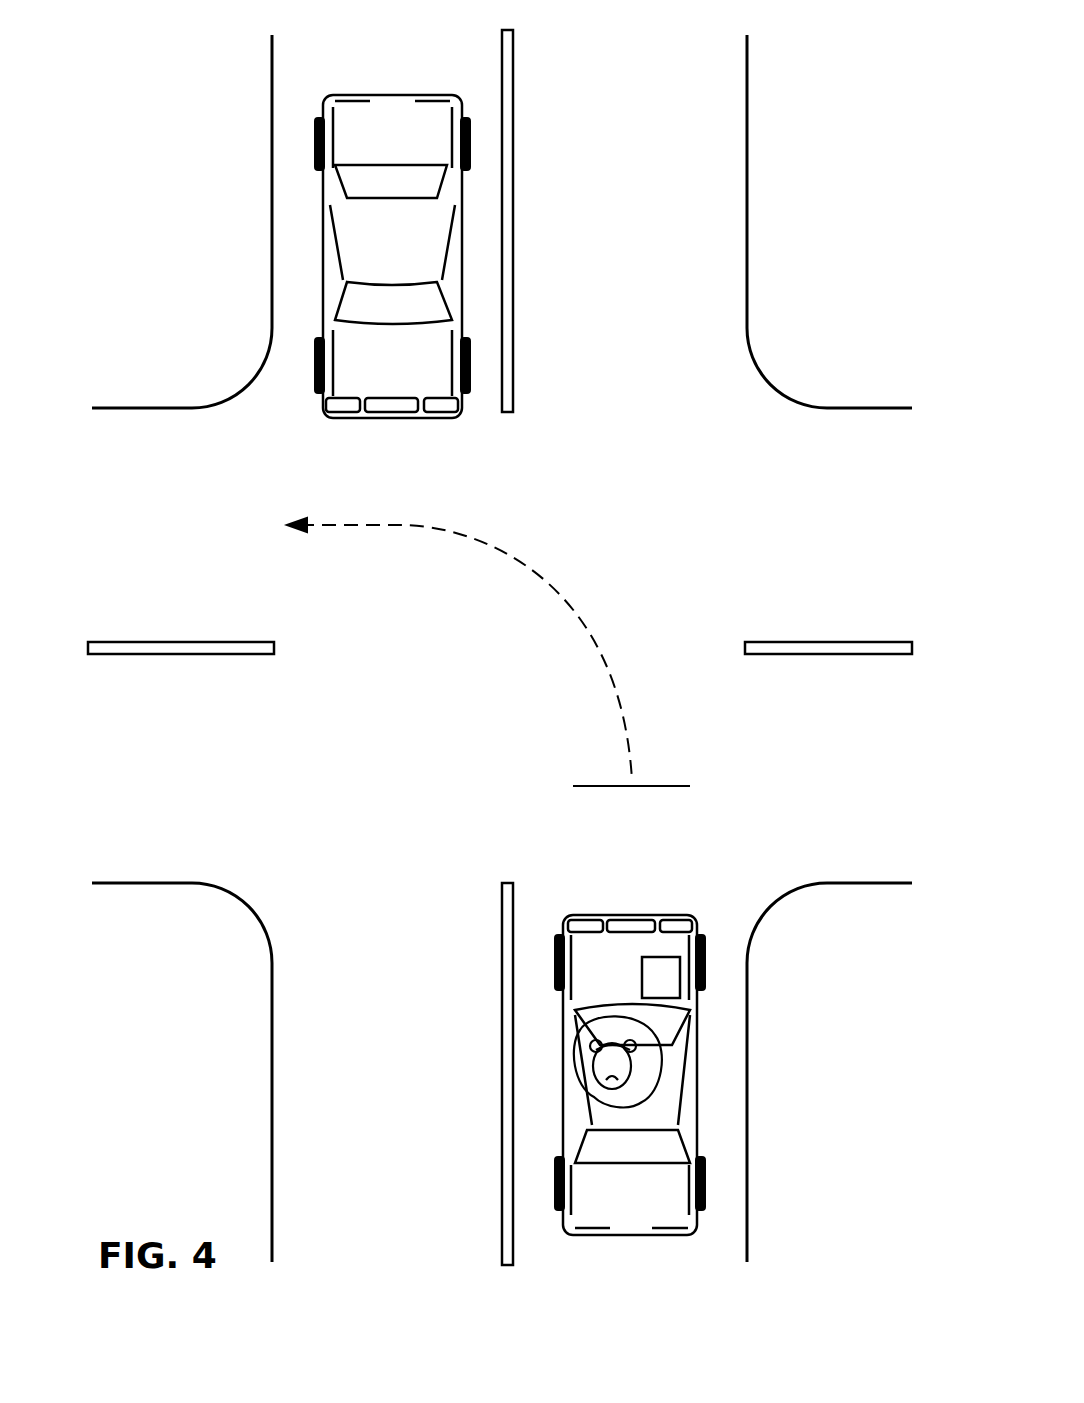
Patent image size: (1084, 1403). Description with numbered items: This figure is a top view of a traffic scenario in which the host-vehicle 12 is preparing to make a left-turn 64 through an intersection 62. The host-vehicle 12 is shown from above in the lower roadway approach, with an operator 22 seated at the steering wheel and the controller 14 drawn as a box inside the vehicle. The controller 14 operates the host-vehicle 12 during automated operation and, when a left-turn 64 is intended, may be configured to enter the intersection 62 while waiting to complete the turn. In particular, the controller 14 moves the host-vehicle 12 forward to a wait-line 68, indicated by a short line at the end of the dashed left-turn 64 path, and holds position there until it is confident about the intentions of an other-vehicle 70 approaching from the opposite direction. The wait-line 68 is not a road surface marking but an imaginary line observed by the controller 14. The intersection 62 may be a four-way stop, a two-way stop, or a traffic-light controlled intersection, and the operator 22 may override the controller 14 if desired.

The host-vehicle 12 is at (635, 1075).
The controller 14 is at (676, 990).
The operator 22 is at (595, 1077).
The intersection 62 is at (778, 272).
The left-turn 64 is at (548, 582).
The wait-line 68 is at (652, 787).
The other-vehicle 70 is at (330, 96).